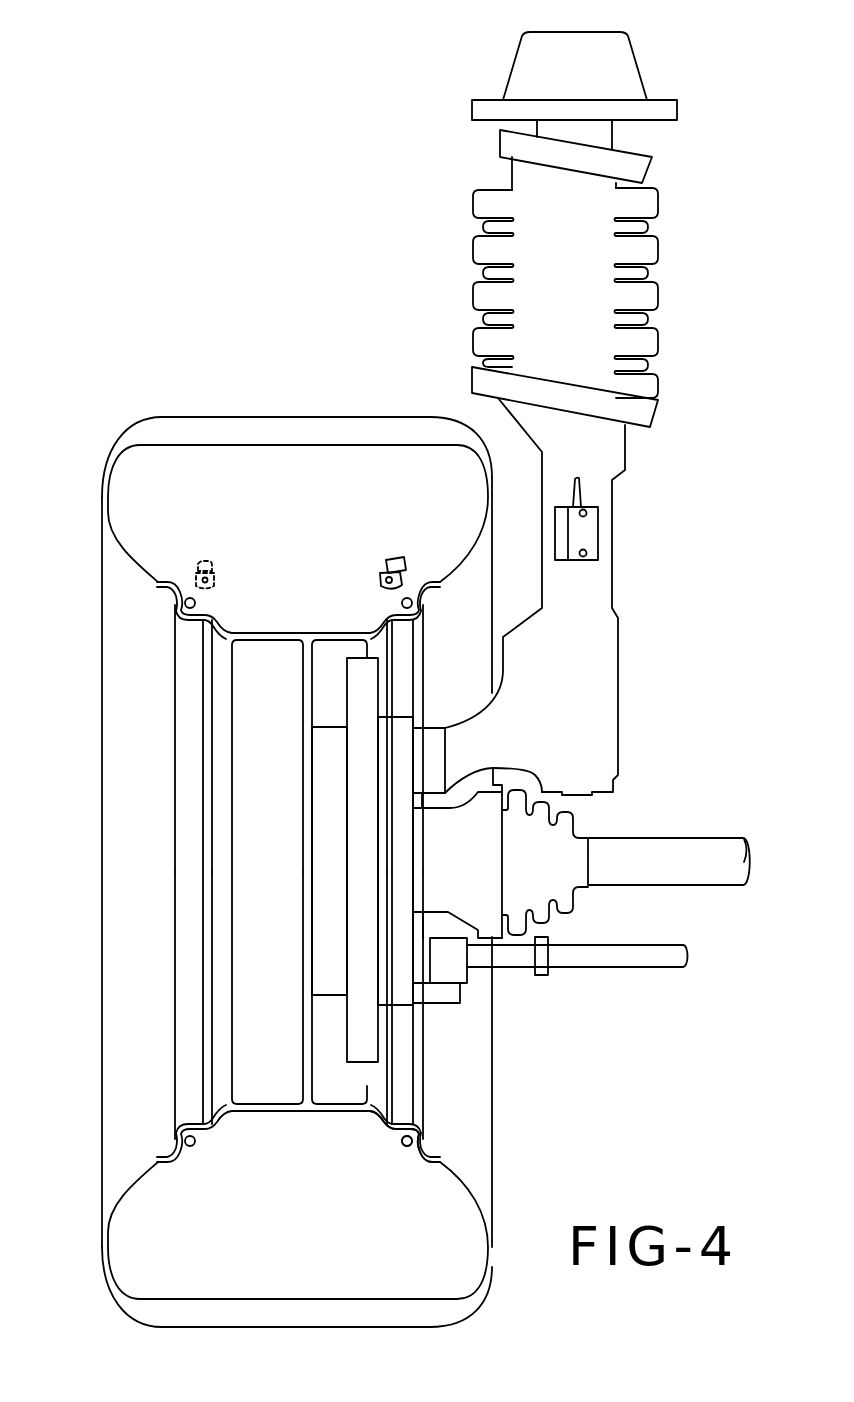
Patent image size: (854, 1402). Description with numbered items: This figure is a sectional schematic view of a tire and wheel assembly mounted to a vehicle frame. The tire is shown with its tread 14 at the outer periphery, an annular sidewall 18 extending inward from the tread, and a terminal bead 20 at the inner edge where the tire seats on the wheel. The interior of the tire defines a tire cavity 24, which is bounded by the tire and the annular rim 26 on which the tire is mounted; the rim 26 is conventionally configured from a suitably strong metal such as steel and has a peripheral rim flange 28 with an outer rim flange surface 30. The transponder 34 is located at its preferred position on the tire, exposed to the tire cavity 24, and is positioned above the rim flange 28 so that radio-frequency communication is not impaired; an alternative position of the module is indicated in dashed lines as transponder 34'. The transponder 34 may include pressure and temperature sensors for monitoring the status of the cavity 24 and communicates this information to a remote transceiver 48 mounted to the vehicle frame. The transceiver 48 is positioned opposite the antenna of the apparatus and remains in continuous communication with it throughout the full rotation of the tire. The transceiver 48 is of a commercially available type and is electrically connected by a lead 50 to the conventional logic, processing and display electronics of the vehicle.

The tread 14 is at (240, 1330).
The annular sidewall 18 is at (492, 1264).
The terminal bead 20 is at (407, 1147).
The tire cavity 24 is at (172, 1252).
The annular rim 26 is at (265, 1113).
The rim flange 28 is at (420, 1144).
The outer rim flange surface 30 is at (423, 1152).
The transponder 34 is at (377, 546).
The tire pressure sensor alternate position 34' is at (233, 533).
The transceiver 48 is at (592, 533).
The lead 50 is at (580, 492).